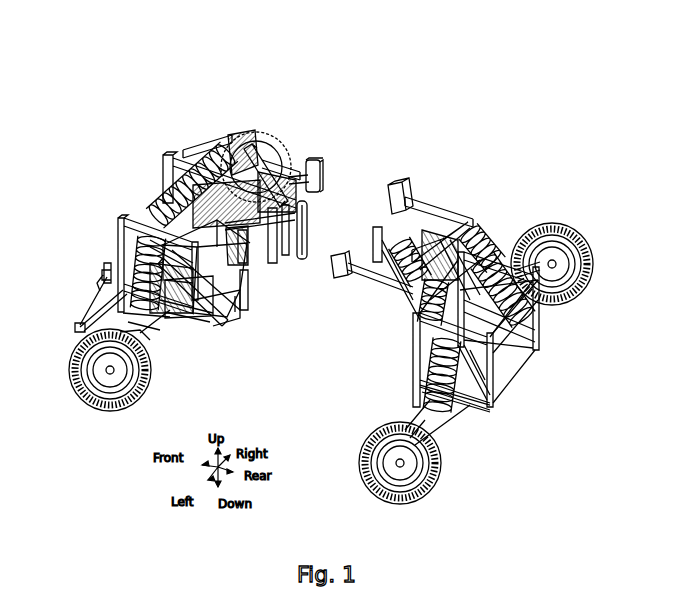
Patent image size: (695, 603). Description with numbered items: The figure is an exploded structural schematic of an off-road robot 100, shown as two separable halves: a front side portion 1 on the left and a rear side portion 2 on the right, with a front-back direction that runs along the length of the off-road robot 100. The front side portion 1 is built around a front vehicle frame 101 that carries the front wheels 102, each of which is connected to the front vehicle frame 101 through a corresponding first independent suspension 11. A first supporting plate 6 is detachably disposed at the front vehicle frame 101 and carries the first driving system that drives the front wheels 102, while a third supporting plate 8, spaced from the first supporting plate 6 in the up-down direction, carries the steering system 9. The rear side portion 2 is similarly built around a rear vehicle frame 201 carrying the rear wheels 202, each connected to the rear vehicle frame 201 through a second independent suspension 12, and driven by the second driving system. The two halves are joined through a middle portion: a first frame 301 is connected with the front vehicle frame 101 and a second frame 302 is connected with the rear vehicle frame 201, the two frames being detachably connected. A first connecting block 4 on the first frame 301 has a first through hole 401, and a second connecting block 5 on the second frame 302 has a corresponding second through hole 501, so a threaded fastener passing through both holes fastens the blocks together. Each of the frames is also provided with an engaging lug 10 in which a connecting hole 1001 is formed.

The off-road robot 100 is at (140, 58).
The front side portion 1 is at (126, 160).
The engaging lug 10 is at (258, 150).
The connecting hole 1001 is at (283, 143).
The first frame 301 is at (272, 162).
The first connecting block 4 is at (325, 170).
The first through hole 401 is at (320, 183).
The front vehicle frame 101 is at (127, 213).
The steering system 9 is at (108, 266).
The first independent suspension 11 is at (112, 292).
The front wheel 102 is at (95, 385).
The third supporting plate 8 is at (188, 316).
The first supporting plate 6 is at (228, 324).
The rear side portion 2 is at (528, 205).
The second connecting block 5 is at (400, 190).
The second through hole 501 is at (410, 207).
The second frame 302 is at (435, 205).
The rear wheel 202 is at (568, 243).
The rear vehicle frame 201 is at (543, 335).
The second independent suspension 12 is at (420, 392).